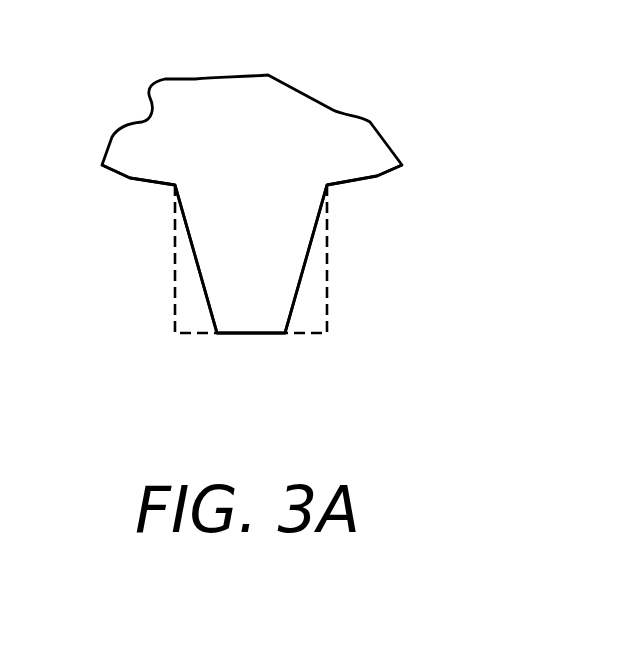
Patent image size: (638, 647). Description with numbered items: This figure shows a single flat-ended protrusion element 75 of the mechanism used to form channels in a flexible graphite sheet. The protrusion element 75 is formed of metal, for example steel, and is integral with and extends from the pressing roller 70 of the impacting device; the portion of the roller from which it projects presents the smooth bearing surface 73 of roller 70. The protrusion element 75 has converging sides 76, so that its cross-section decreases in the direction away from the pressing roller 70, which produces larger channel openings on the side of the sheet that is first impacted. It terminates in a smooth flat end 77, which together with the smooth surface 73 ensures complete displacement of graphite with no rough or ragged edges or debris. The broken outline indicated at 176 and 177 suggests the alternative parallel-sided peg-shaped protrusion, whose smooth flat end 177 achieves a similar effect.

The pressing roller 70 is at (258, 118).
The smooth bearing surface 73 is at (130, 178).
The protrusion element 75 is at (278, 273).
The converging sides 76 is at (193, 257).
The smooth flat end 77 is at (262, 333).
The right removed portion outline 176 is at (327, 315).
The smooth flat end 177 is at (198, 337).